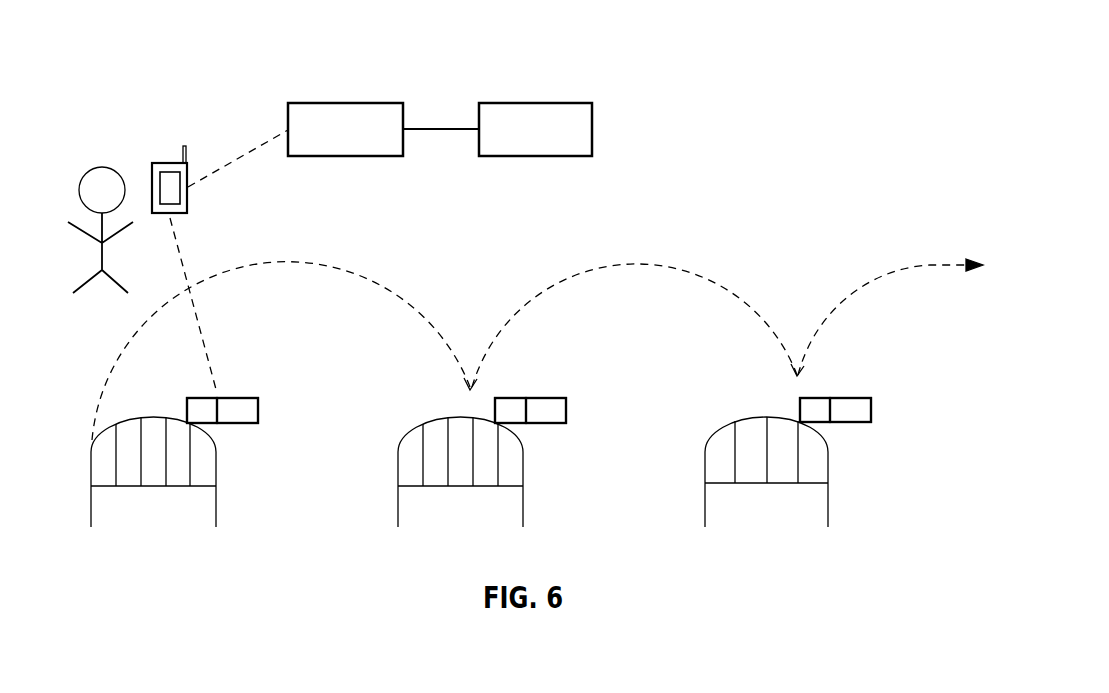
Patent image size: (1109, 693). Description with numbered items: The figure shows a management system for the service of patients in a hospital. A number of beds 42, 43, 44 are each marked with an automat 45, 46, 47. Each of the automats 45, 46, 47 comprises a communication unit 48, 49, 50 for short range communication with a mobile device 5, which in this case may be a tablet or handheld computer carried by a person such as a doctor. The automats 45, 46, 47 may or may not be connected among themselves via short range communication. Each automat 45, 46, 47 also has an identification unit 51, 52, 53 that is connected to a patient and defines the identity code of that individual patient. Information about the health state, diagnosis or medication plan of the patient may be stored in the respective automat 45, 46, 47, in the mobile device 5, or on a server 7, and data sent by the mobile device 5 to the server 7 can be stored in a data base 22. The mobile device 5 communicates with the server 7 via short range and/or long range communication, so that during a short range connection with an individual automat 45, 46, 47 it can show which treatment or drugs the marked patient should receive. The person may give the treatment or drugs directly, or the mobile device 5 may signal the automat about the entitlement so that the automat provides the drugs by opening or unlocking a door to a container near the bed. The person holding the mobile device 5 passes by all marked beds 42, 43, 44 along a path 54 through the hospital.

The mobile device 5 is at (188, 197).
The server 7 is at (345, 103).
The data base 22 is at (548, 103).
The bed 42 is at (153, 487).
The bed 43 is at (460, 487).
The bed 44 is at (755, 483).
The automat 45 is at (238, 376).
The automat 46 is at (531, 376).
The automat 47 is at (836, 376).
The communication unit 48 is at (205, 397).
The communication unit 49 is at (495, 412).
The communication unit 50 is at (800, 412).
The identification unit 51 is at (258, 412).
The identification unit 52 is at (566, 410).
The identification unit 53 is at (871, 412).
The path 54 is at (350, 268).